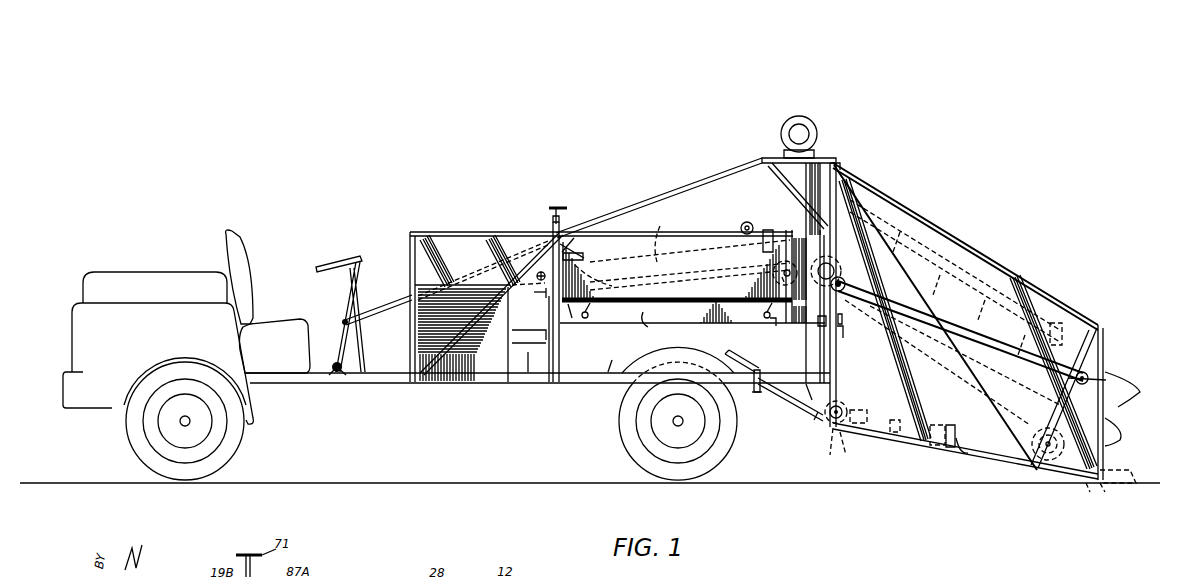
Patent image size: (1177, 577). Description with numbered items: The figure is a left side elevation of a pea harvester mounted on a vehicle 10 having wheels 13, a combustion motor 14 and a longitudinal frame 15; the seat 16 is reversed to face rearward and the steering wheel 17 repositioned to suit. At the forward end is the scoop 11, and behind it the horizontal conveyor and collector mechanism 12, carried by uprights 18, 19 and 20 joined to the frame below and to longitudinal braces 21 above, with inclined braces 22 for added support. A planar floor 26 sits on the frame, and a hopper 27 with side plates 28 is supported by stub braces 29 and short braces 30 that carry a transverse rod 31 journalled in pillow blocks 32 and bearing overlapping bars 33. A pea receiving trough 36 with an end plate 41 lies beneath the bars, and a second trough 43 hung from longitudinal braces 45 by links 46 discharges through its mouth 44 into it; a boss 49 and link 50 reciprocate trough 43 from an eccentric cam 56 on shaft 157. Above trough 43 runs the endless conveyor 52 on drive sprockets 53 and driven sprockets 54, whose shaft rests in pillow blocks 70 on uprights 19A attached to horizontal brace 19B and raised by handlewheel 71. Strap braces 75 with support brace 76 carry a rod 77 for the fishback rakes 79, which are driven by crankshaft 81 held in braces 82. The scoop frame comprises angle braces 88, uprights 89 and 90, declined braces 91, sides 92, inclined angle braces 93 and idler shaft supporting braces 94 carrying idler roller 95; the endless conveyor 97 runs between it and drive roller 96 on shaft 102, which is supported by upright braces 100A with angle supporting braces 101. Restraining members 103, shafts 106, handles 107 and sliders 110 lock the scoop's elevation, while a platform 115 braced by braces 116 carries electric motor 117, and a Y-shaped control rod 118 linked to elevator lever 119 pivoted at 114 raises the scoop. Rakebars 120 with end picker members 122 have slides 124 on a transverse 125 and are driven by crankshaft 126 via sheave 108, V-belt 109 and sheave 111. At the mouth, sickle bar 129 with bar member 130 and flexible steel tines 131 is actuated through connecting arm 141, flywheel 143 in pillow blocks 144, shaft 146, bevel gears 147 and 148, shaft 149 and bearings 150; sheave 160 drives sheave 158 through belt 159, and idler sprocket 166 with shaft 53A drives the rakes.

The vehicle 10 is at (112, 407).
The scoop 11 is at (1013, 262).
The horizontal conveyor and collector mechanism 12 is at (684, 232).
The wheels 13 is at (228, 448).
The combustion motor 14 is at (155, 285).
The longitudinal frame 15 is at (583, 385).
The seat 16 is at (236, 243).
The steering wheel 17 is at (348, 263).
The uprights 18 is at (412, 231).
The uprights 19 is at (560, 358).
The uprights 19A is at (568, 250).
The horizontal brace 19B is at (553, 208).
The uprights 20 is at (787, 237).
The longitudinal braces 21 is at (700, 230).
The inclined braces 22 is at (470, 330).
The planar floor 26 is at (608, 372).
The hopper 27 is at (450, 370).
The side plates 28 is at (463, 245).
The stub braces 29 is at (508, 382).
The horizontal short braces 30 is at (538, 293).
The transverse rod 31 is at (545, 296).
The pillow blocks 32 is at (541, 270).
The bars 33 is at (530, 263).
The pea receiving trough 36 is at (529, 374).
The end plate 41 is at (534, 344).
The second trough 43 is at (646, 320).
The mouth 44 is at (550, 382).
The longitudinal braces 45 is at (705, 316).
The links 46 is at (587, 318).
The boss 49 is at (770, 319).
The link 50 is at (818, 318).
The endless conveyor 52 is at (665, 270).
The drive sprockets 53 is at (774, 274).
The shaft 53A is at (782, 277).
The driven sprockets 54 is at (612, 286).
The eccentric cam 56 is at (820, 323).
The pillow blocks 70 is at (571, 320).
The handlewheel 71 is at (558, 206).
The strap braces 75 is at (576, 238).
The support brace 76 is at (584, 262).
The rod 77 is at (586, 256).
The fishback rakes 79 is at (659, 232).
The crankshaft 81 is at (768, 229).
The braces 82 is at (748, 221).
The angle braces 88 is at (1040, 480).
The uprights 89 is at (1104, 352).
The uprights 90 is at (838, 162).
The declined braces 91 is at (966, 258).
The sides 92 is at (990, 255).
The inclined angle braces 93 is at (1020, 444).
The idler shaft supporting braces 94 is at (1090, 330).
The idler roller 95 is at (1056, 462).
The drive roller 96 is at (824, 262).
The endless conveyor 97 is at (917, 372).
The upright braces 100A is at (838, 360).
The angle supporting braces 101 is at (800, 402).
The shaft 102 is at (846, 283).
The restraining members 103 is at (810, 410).
The shafts 106 is at (756, 380).
The handles 107 is at (758, 394).
The sheave 108 is at (1106, 380).
The V-belt 109 is at (1025, 358).
The slider 110 is at (749, 362).
The sheave 111 is at (848, 287).
The pivot 114 is at (337, 373).
The platform 115 is at (822, 157).
The braces 116 is at (780, 172).
The electric motor 117 is at (803, 116).
The Y-shaped control rod 118 is at (708, 178).
The elevator lever 119 is at (354, 283).
The rakebars 120 is at (1056, 333).
The end picker members 122 is at (1126, 400).
The slide 124 is at (880, 229).
The transverse 125 is at (866, 213).
The crankshaft 126 is at (1090, 375).
The sickle bar 129 is at (1130, 472).
The bar member 130 is at (1102, 480).
The flexible steel tines 131 is at (1085, 482).
The connecting arm 141 is at (962, 453).
The flywheel 143 is at (955, 430).
The pillow blocks 144 is at (861, 430).
The shaft 146 is at (895, 434).
The bevel gear 147 is at (845, 402).
The mating bevel gear 148 is at (841, 442).
The shaft 149 is at (832, 446).
The bearings 150 is at (843, 404).
The shaft 157 is at (815, 422).
The sheave 158 is at (840, 331).
The belt 159 is at (841, 318).
The sheave 160 is at (844, 278).
The idler sprocket 166 is at (745, 224).